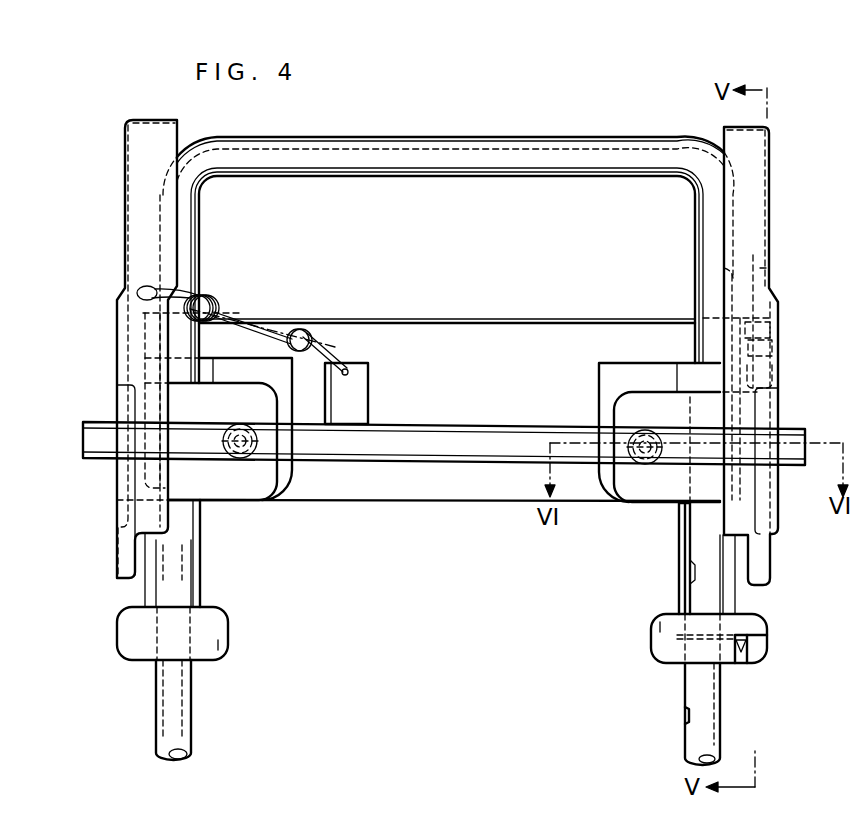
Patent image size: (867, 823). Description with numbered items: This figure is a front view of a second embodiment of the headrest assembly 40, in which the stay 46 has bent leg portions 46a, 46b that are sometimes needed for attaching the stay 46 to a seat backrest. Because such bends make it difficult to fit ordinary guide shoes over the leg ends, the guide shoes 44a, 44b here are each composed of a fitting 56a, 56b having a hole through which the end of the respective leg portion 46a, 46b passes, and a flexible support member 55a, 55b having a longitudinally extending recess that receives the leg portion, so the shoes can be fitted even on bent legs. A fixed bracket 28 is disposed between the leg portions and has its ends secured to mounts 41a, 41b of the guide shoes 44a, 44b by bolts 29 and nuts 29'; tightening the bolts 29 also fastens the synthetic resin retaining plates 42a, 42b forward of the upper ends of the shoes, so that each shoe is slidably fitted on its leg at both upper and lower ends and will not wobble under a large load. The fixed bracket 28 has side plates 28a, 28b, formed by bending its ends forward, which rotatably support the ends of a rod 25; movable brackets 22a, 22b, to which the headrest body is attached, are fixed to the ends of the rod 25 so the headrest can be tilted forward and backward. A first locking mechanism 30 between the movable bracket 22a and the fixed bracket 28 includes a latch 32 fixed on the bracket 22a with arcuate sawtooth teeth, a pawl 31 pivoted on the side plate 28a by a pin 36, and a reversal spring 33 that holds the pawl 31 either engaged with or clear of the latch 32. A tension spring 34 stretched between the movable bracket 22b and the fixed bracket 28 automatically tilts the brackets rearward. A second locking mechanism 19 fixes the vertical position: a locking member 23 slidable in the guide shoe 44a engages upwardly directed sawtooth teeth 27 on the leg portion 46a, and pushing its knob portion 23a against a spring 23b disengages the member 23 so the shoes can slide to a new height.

The second locking mechanism 19 is at (782, 639).
The movable bracket 22a is at (757, 168).
The movable bracket 22b is at (143, 165).
The locking member 23 is at (677, 637).
The knob portion 23a is at (757, 650).
The spring 23b is at (742, 655).
The rod 25 is at (440, 438).
The teeth 27 is at (687, 710).
The fixed bracket 28 is at (460, 488).
The side plate 28a is at (780, 376).
The side plate 28b is at (135, 367).
The bolts 29 is at (432, 428).
The nuts 29' is at (442, 428).
The first locking mechanism 30 is at (776, 300).
The pawl 31 is at (777, 322).
The latch 32 is at (765, 268).
The reversal spring 33 is at (716, 272).
The tension spring 34 is at (318, 337).
The pin 36 is at (777, 350).
The backrest assembly 40 is at (579, 132).
The mount 41a is at (598, 500).
The mount 41b is at (293, 490).
The retaining plate 42a is at (643, 490).
The retaining plate 42b is at (228, 488).
The guide shoe 44a is at (772, 618).
The guide shoe 44b is at (125, 610).
The stay 46 is at (450, 147).
The leg portion 46a is at (705, 735).
The leg portion 46b is at (167, 694).
The flexible support member 55a is at (683, 572).
The flexible support member 55b is at (197, 593).
The fitting 56a is at (662, 626).
The fitting 56b is at (218, 645).